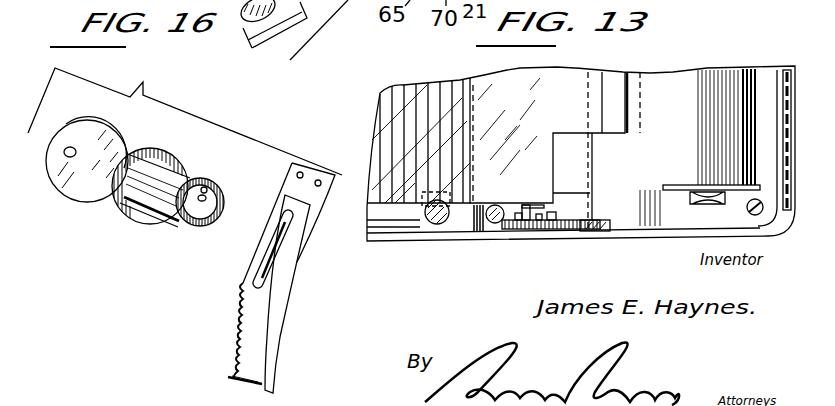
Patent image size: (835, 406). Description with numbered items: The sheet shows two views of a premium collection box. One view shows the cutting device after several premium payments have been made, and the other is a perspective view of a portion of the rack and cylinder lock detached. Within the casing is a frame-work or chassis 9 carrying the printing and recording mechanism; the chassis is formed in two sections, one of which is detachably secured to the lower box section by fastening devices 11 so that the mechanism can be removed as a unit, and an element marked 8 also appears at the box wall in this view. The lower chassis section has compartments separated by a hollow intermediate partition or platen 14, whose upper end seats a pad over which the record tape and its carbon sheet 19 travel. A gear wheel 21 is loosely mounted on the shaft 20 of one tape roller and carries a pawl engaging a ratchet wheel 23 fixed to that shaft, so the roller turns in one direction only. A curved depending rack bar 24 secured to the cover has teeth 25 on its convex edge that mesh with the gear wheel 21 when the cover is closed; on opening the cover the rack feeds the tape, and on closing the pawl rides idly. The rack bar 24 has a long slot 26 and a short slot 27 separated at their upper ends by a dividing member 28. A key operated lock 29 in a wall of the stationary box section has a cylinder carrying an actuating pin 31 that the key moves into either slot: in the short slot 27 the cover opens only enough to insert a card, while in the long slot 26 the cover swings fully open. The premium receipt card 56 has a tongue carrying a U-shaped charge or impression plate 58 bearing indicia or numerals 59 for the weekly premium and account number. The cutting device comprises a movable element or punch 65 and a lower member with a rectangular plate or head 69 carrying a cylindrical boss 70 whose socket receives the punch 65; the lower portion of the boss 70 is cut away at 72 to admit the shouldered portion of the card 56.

In FIG. 13, the end wall 8 is at (788, 68).
In FIG. 13, the frame-work or chassis 9 is at (762, 80).
In FIG. 13, the fastening devices 11 is at (520, 252).
In FIG. 13, the intermediate partition or platen 14 is at (594, 203).
In FIG. 13, the carbon sheet 19 is at (706, 129).
In FIG. 13, the shaft 20 is at (547, 203).
In FIG. 13, the gear wheel 21 is at (560, 232).
In FIG. 13, the ratchet wheel 23 is at (545, 231).
In FIG. 16, the rack bar 24 is at (255, 352).
In FIG. 13, the rack bar 24 is at (592, 222).
In FIG. 16, the teeth 25 is at (234, 318).
In FIG. 16, the long slot 26 is at (272, 303).
In FIG. 16, the short slot 27 is at (270, 244).
In FIG. 16, the dividing member 28 is at (300, 236).
In FIG. 16, the key operated lock 29 is at (158, 147).
In FIG. 16, the actuating pin 31 is at (205, 186).
In FIG. 13, the premium receipt card 56 is at (404, 141).
In FIG. 13, the charge or impression plate 58 is at (600, 98).
In FIG. 13, the indicia or numerals 59 is at (620, 86).
In FIG. 13, the movable element or punch 65 is at (440, 226).
In FIG. 13, the rectangular plate or head 69 is at (458, 212).
In FIG. 13, the cylindrical boss 70 is at (450, 205).
In FIG. 16, the cut away portion 72 is at (262, 42).